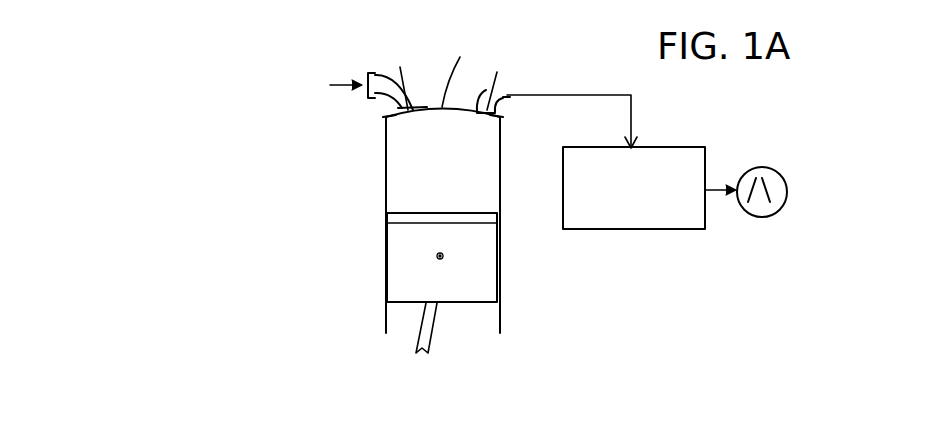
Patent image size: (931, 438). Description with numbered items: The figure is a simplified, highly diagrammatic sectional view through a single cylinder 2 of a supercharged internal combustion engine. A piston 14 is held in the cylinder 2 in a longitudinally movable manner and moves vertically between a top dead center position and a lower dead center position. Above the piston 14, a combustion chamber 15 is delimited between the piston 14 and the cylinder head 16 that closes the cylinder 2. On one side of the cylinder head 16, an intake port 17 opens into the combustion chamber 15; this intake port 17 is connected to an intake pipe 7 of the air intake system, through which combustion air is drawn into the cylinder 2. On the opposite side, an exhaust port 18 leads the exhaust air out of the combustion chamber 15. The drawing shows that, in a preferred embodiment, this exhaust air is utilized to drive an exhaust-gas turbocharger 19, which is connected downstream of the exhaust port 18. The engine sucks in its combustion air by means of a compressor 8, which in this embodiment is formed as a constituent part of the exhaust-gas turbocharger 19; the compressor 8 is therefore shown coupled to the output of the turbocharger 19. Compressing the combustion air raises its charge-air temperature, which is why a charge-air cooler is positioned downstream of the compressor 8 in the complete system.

The cylinder 2 is at (306, 126).
The intake pipe 7 is at (332, 84).
The compressor 8 is at (785, 168).
The piston 14 is at (397, 277).
The combustion chamber 15 is at (412, 180).
The cylinder head 16 is at (461, 61).
The intake port 17 is at (382, 72).
The exhaust port 18 is at (505, 87).
The exhaust-gas turbocharger 19 is at (667, 229).